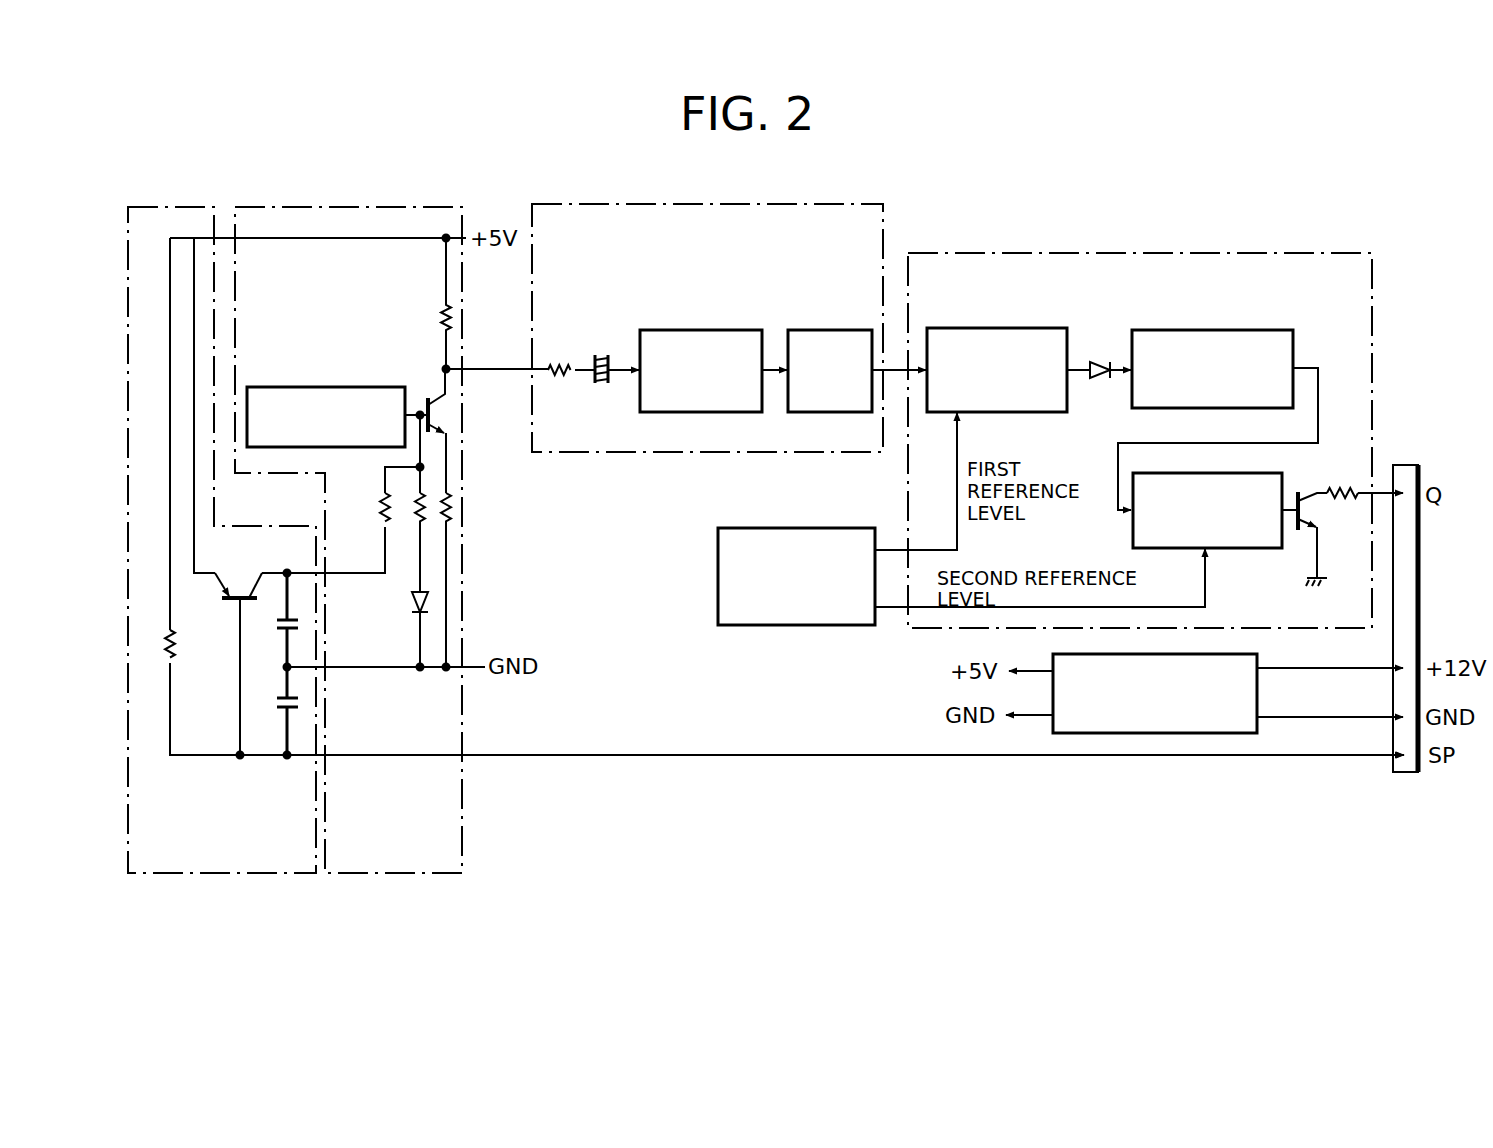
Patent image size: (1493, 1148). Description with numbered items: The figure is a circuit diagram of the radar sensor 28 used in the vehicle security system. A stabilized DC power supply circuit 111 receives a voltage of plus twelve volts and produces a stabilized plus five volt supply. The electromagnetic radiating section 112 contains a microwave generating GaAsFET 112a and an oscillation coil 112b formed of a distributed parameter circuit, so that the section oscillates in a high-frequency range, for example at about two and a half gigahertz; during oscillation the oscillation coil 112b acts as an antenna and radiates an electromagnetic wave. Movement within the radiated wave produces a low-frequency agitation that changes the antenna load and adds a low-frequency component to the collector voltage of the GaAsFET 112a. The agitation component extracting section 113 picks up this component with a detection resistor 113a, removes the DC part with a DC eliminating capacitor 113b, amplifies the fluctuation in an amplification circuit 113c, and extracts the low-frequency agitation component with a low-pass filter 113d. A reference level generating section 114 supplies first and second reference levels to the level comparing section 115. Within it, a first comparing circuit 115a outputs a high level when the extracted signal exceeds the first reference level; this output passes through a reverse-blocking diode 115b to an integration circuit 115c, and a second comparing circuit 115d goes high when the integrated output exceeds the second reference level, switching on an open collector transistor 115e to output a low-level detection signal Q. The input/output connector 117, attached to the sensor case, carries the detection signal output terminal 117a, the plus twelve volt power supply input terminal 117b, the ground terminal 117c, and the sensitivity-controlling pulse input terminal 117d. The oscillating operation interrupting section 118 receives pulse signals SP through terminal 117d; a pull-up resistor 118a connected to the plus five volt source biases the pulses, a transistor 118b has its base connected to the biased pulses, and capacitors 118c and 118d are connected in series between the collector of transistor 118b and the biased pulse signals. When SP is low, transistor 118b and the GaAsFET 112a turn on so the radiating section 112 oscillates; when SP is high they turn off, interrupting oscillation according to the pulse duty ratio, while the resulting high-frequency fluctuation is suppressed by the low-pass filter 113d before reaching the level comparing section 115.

The radar sensor 28 is at (783, 779).
The stabilized DC power supply circuit 111 is at (1127, 733).
The electromagnetic radiating section 112 is at (388, 875).
The GaAsFET 112a is at (424, 400).
The oscillation coil 112b is at (322, 387).
The agitation component extracting section 113 is at (630, 452).
The detection resistor 113a is at (558, 362).
The DC eliminating capacitor 113b is at (603, 352).
The amplification circuit 113c is at (723, 330).
The low-pass filter 113d is at (832, 330).
The reference level generating section 114 is at (823, 528).
The level comparing section 115 is at (1220, 253).
The first comparing circuit 115a is at (1027, 328).
The reverse-blocking diode 115b is at (1100, 380).
The integration circuit 115c is at (1213, 330).
The second comparing circuit 115d is at (1247, 548).
The open collector transistor 115e is at (1315, 492).
The input/output connector 117 is at (1405, 775).
The detection signal output terminal 117a is at (1403, 470).
The +12V power supply input terminal 117b is at (1403, 663).
The ground terminal 117c is at (1403, 712).
The sensitivity-controlling pulse input terminal 117d is at (1403, 751).
The oscillating operation interrupting section 118 is at (205, 875).
The pull-up resistor 118a is at (186, 648).
The transistor 118b is at (238, 592).
The capacitor 118c is at (277, 625).
The capacitor 118d is at (300, 703).